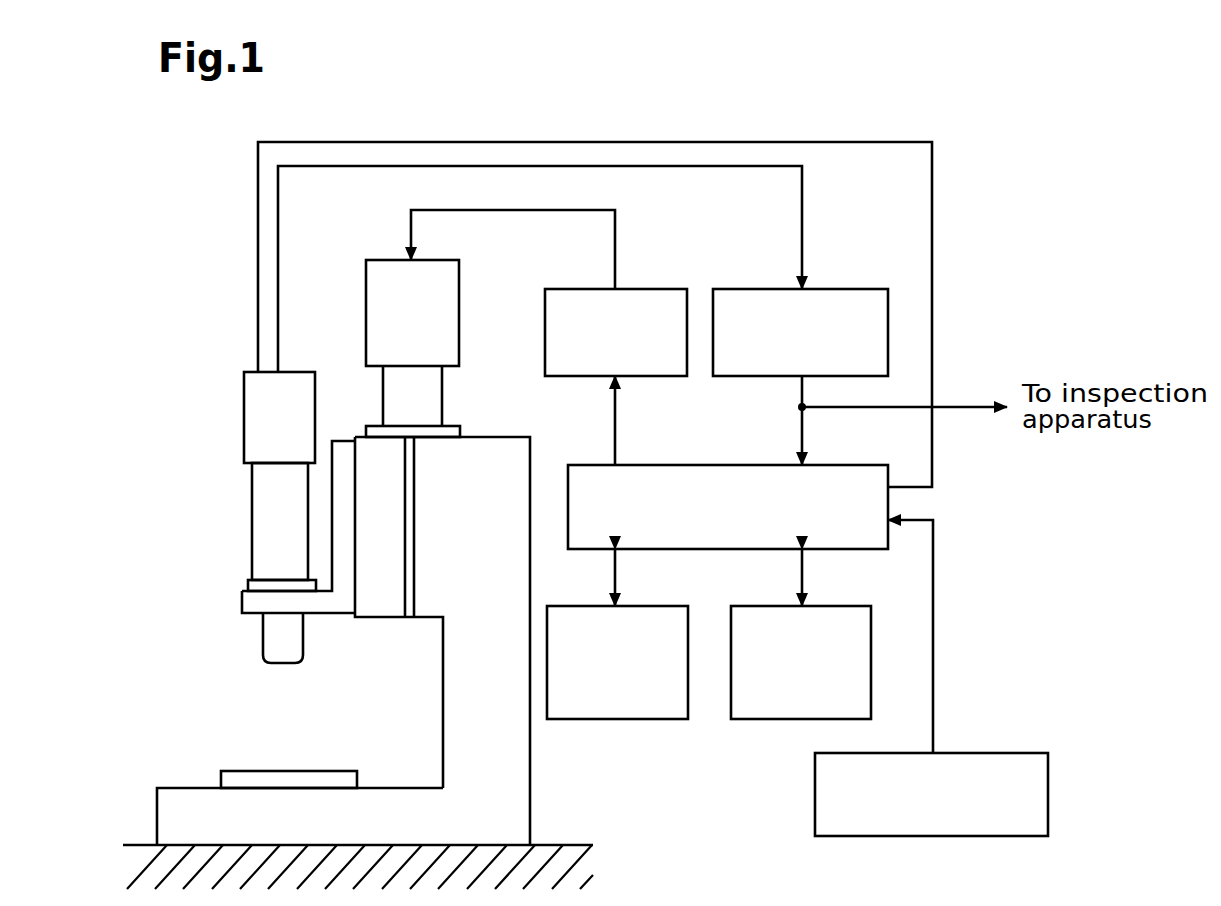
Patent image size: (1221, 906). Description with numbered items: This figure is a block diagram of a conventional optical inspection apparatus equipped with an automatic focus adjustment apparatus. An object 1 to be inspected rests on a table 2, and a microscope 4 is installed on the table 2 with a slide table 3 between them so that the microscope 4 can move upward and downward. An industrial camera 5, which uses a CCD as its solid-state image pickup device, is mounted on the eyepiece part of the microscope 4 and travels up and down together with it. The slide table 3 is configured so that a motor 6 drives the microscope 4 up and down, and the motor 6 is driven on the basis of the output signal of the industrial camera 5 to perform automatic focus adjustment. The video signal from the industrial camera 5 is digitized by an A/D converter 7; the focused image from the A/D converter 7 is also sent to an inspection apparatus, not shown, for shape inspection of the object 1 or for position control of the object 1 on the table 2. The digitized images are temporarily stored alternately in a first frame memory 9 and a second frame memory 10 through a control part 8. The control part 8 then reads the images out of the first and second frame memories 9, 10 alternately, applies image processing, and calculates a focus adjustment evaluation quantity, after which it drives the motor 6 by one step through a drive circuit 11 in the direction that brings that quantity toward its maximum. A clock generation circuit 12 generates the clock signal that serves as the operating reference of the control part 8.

The object to be inspected 1 is at (237, 778).
The table 2 is at (175, 800).
The slide table 3 is at (365, 453).
The microscope 4 is at (258, 512).
The industrial camera 5 is at (250, 387).
The motor 6 is at (374, 272).
The A/D converter 7 is at (853, 288).
The control part 8 is at (853, 464).
The first frame memory 9 is at (643, 720).
The second frame memory 10 is at (777, 720).
The drive circuit 11 is at (672, 288).
The clock generation circuit 12 is at (997, 752).